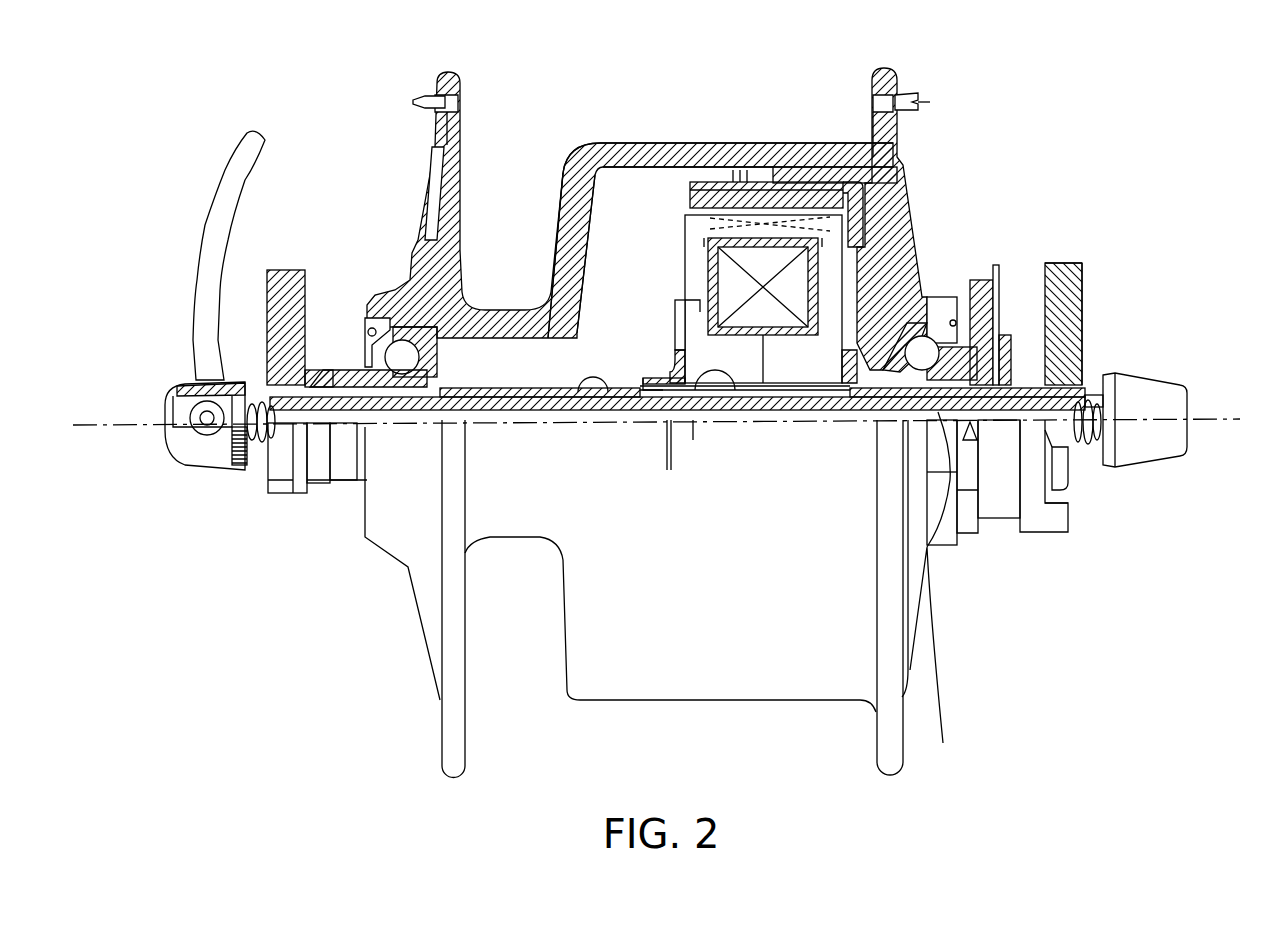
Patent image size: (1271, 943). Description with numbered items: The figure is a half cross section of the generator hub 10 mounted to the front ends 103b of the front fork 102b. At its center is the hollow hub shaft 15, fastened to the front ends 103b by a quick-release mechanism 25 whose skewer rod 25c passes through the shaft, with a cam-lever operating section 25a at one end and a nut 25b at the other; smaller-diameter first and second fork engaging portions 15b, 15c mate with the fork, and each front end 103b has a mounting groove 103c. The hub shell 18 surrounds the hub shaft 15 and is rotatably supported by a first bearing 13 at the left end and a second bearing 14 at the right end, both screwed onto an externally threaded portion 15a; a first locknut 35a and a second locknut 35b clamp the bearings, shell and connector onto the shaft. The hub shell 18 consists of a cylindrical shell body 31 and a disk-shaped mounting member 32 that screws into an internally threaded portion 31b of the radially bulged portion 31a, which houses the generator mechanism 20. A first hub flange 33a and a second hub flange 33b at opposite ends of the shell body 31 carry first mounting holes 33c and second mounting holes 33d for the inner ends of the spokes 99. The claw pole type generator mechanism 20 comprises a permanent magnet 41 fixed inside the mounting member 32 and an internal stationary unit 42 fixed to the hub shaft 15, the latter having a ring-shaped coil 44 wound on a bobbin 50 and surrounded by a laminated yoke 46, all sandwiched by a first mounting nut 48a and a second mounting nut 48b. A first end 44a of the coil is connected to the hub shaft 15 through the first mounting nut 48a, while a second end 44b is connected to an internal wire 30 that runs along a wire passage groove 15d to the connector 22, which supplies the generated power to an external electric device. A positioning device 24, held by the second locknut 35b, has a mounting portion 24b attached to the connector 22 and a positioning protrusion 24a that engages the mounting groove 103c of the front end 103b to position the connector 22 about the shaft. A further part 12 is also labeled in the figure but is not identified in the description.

The generator hub 10 is at (1117, 80).
The hub axle 12 is at (996, 262).
The first bearing 13 is at (367, 327).
The second bearing 14 is at (922, 343).
The hub shaft 15 is at (550, 357).
The externally threaded portion 15a is at (583, 415).
The first fork engaging portion 15b is at (298, 445).
The second fork engaging portion 15c is at (1055, 433).
The wire passage groove 15d is at (693, 420).
The hub shell 18 is at (670, 140).
The generator mechanism 20 is at (668, 249).
The connector 22 is at (1020, 283).
The positioning device 24 is at (1073, 533).
The positioning protrusion 24a is at (1060, 510).
The mounting portion 24b is at (1032, 488).
The quick-release mechanism 25 is at (183, 281).
The operating section 25a is at (190, 440).
The nut 25b is at (1157, 387).
The skewer rod 25c is at (1090, 390).
The internal wire 30 is at (944, 594).
The shell body 31 is at (568, 153).
The bulged portion 31a is at (633, 143).
The internally threaded portion 31b is at (827, 167).
The mounting member 32 is at (903, 170).
The first hub flange 33a is at (415, 100).
The second hub flange 33b is at (895, 95).
The first mounting holes 33c is at (458, 98).
The second mounting holes 33d is at (872, 95).
The first locknut 35a is at (317, 480).
The second locknut 35b is at (1090, 287).
The permanent magnet 41 is at (757, 197).
The internal stationary unit 42 is at (673, 283).
The coil 44 is at (678, 322).
The first end of the coil 44a is at (705, 335).
The second end of the coil 44b is at (850, 305).
The laminated yoke 46 is at (666, 375).
The first mounting nut 48a is at (663, 420).
The second mounting nut 48b is at (840, 420).
The bobbin 50 is at (720, 315).
The spokes 99 is at (918, 102).
The front fork 102b is at (1093, 285).
The front ends 103b is at (287, 477).
The mounting groove 103c is at (1077, 473).